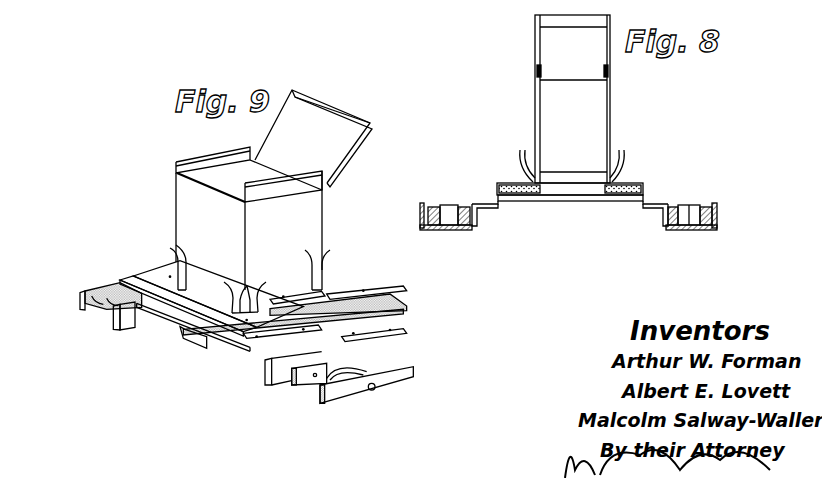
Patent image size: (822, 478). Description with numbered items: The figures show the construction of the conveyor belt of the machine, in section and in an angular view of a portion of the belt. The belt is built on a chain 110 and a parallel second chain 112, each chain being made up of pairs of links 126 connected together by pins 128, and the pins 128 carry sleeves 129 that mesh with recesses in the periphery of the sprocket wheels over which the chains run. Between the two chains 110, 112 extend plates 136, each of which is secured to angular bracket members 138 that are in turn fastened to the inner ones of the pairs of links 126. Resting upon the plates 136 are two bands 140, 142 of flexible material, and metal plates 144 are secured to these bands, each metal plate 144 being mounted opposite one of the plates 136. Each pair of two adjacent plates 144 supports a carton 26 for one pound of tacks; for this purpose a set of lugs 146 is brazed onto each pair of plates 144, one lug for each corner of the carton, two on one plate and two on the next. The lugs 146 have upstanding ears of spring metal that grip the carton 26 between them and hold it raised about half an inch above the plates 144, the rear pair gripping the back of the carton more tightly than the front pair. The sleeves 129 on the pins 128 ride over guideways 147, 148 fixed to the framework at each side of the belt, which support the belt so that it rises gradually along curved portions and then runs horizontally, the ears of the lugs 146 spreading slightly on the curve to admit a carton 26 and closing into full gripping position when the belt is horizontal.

In FIG. 9, the carton 26 is at (320, 219).
In FIG. 8, the carton 26 is at (606, 100).
In FIG. 9, the chain 110 is at (354, 404).
In FIG. 8, the chain 110 is at (687, 200).
In FIG. 9, the second chain 112 is at (96, 284).
In FIG. 8, the second chain 112 is at (432, 200).
In FIG. 9, the links 126 is at (306, 386).
In FIG. 8, the links 126 is at (708, 206).
In FIG. 9, the pins 128 is at (374, 389).
In FIG. 9, the sleeves 129 is at (338, 378).
In FIG. 8, the sleeves 129 is at (686, 228).
In FIG. 9, the plates 136 is at (180, 314).
In FIG. 8, the plates 136 is at (520, 202).
In FIG. 9, the angular bracket members 138 is at (132, 326).
In FIG. 8, the angular bracket members 138 is at (478, 216).
In FIG. 9, the band of flexible material 140 is at (206, 346).
In FIG. 8, the band of flexible material 140 is at (498, 190).
In FIG. 9, the band of flexible material 142 is at (104, 302).
In FIG. 9, the metal plates 144 is at (153, 278).
In FIG. 8, the metal plates 144 is at (630, 184).
In FIG. 9, the lugs 146 is at (308, 282).
In FIG. 8, the lugs 146 is at (607, 178).
In FIG. 8, the guideway 147 is at (700, 230).
In FIG. 8, the guideway 148 is at (440, 230).